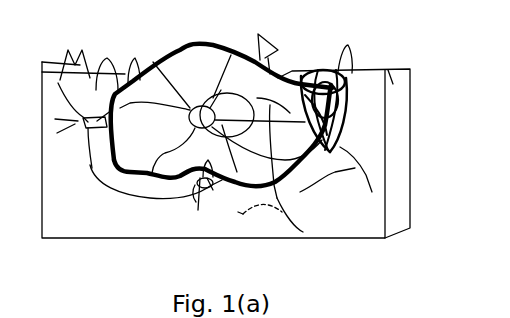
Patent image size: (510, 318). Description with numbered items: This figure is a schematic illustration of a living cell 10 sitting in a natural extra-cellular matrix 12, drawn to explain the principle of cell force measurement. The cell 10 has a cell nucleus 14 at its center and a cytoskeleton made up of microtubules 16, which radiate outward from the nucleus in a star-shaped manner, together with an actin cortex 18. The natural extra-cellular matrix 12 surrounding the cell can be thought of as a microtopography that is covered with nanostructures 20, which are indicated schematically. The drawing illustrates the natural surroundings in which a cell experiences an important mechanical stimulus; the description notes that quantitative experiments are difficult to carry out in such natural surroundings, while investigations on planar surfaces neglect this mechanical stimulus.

The cell 10 is at (162, 31).
The natural extra-cellular matrix 12 is at (75, 223).
The cell nucleus 14 is at (231, 55).
The microtubules 16 is at (153, 62).
The actin cortex 18 is at (352, 72).
The nanostructures 20 is at (281, 215).